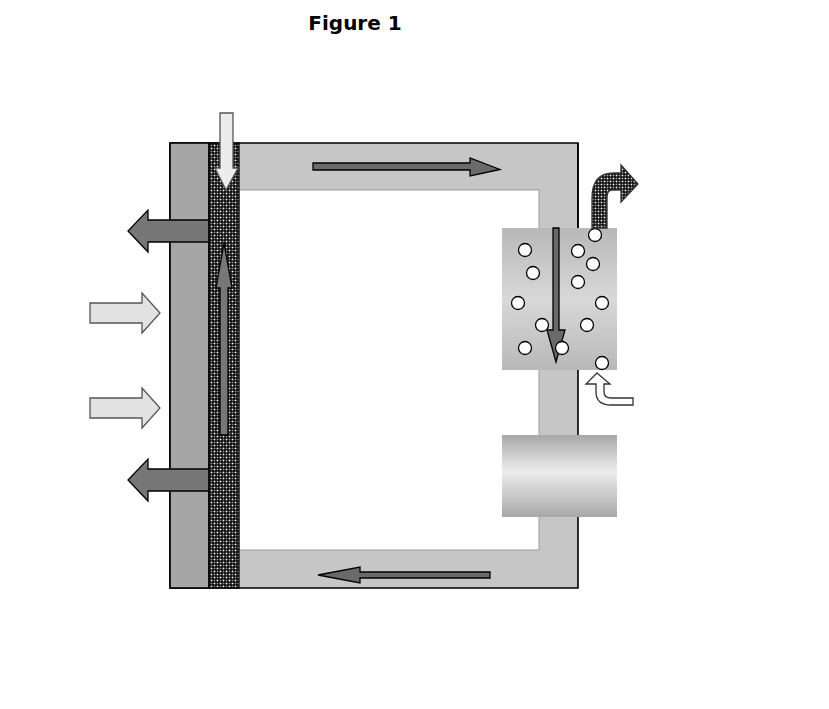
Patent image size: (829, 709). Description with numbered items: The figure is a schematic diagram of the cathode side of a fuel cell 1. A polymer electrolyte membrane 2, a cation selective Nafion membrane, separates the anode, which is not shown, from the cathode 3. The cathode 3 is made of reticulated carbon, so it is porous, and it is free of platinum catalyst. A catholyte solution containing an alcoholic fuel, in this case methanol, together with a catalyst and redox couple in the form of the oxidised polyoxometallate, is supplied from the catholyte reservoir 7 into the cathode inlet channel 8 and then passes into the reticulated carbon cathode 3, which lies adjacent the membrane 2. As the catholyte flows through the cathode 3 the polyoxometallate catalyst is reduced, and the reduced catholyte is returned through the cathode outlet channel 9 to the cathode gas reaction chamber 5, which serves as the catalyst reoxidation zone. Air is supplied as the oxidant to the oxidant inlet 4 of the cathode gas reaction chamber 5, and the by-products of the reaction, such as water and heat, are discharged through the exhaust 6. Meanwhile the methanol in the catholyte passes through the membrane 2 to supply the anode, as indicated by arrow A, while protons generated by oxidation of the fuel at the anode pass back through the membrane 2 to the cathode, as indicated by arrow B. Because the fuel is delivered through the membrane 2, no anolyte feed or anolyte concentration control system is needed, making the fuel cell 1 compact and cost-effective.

The fuel cell 1 is at (606, 580).
The polymer electrolyte membrane 2 is at (194, 528).
The cathode 3 is at (230, 572).
The oxidant inlet 4 is at (620, 398).
The cathode gas reaction chamber 5 is at (598, 289).
The exhaust 6 is at (625, 196).
The catholyte reservoir 7 is at (722, 498).
The cathode inlet channel 8 is at (490, 590).
The cathode outlet channel 9 is at (380, 172).